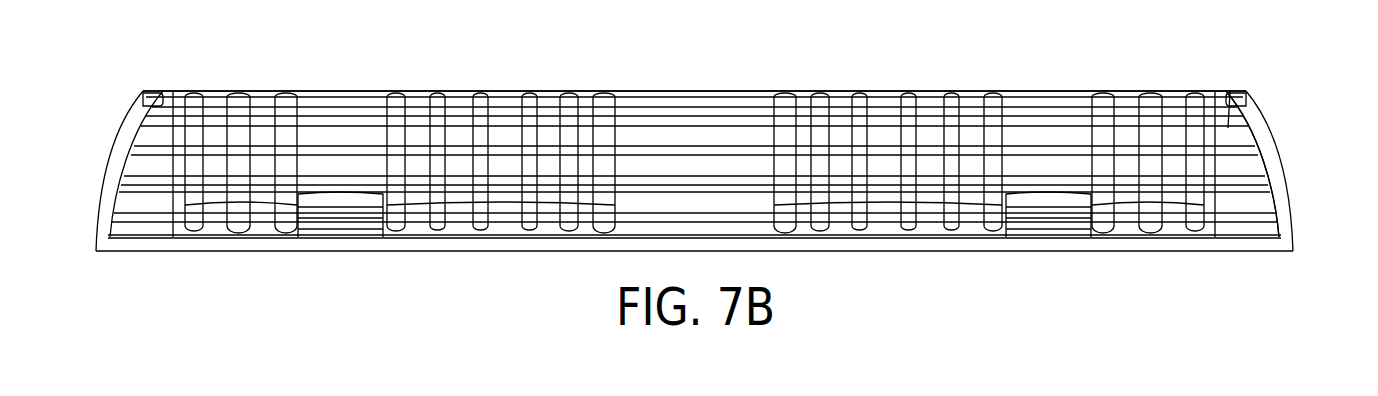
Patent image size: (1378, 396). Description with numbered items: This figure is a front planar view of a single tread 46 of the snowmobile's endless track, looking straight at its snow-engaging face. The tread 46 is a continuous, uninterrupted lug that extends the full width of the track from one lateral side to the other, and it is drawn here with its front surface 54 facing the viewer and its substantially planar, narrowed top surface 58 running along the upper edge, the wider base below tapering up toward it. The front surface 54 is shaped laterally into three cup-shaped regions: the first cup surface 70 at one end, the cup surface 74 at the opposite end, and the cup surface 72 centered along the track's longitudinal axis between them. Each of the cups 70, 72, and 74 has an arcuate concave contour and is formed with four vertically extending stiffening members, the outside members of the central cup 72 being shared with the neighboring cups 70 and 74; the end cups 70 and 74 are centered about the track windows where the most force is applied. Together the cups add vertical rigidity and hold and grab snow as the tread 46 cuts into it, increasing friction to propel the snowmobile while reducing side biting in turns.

The tread 46 is at (1275, 150).
The front surface 54 is at (1233, 137).
The top surface 58 is at (931, 91).
The first cup-shaped surface 70 is at (1046, 135).
The cup surface 72 is at (712, 137).
The cup surface 74 is at (347, 135).